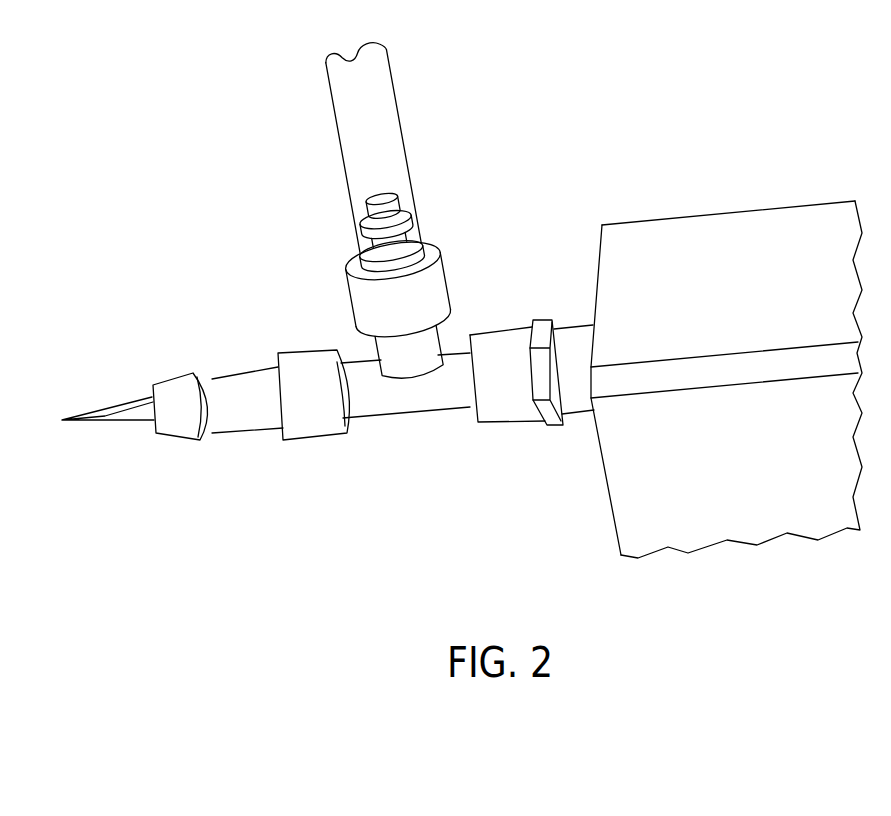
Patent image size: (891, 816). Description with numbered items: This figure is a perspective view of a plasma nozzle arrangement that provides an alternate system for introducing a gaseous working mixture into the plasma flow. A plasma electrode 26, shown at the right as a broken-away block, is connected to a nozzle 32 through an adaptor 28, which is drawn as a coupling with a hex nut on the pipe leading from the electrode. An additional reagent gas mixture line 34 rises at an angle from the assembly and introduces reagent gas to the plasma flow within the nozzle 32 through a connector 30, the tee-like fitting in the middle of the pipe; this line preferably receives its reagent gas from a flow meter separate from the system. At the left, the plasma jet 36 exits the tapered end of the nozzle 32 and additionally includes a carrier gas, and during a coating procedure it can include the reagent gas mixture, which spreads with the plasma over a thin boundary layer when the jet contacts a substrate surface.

The plasma electrode 26 is at (713, 222).
The adaptor 28 is at (518, 331).
The connector 30 is at (413, 403).
The nozzle 32 is at (250, 430).
The reagent gas mixture line 34 is at (348, 154).
The plasma jet 36 is at (128, 403).